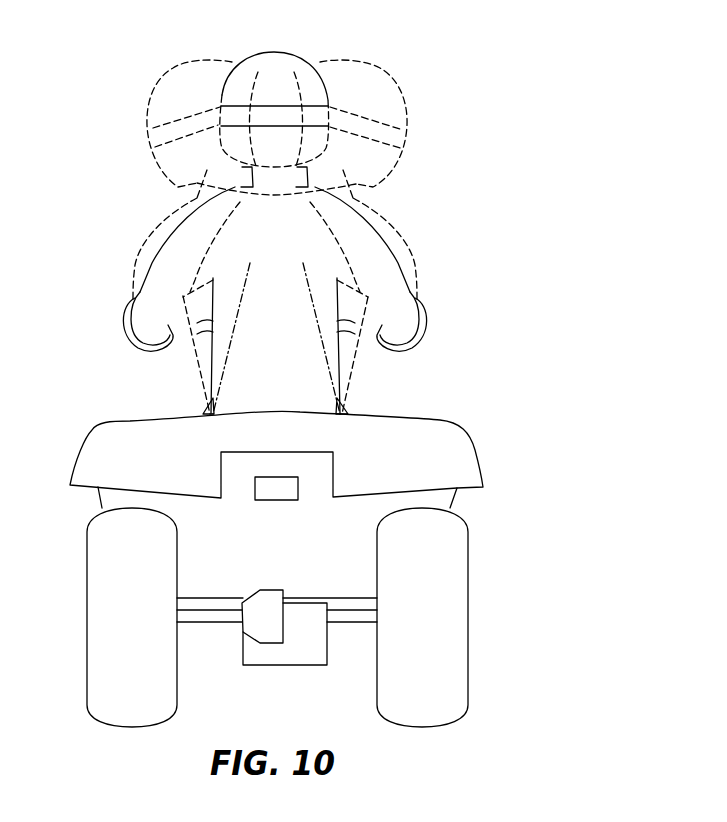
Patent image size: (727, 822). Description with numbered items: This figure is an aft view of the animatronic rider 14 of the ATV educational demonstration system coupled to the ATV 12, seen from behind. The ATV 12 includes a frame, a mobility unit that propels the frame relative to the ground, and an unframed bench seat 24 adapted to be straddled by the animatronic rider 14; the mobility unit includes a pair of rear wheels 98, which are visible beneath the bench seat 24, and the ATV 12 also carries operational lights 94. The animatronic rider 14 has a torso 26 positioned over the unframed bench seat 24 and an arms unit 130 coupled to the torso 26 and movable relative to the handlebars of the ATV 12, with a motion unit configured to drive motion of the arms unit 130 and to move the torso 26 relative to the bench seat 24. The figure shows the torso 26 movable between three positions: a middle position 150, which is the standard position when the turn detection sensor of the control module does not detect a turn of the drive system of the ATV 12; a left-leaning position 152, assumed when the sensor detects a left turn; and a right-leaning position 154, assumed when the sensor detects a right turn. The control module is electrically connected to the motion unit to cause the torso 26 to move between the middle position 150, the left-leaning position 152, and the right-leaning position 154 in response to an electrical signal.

The ATV 12 is at (580, 468).
The animatronic rider 14 is at (555, 156).
The unframed bench seat 24 is at (432, 412).
The torso 26 is at (270, 340).
The operational lights 94 is at (277, 490).
The rear wheels 98 is at (468, 637).
The arms unit 130 is at (197, 263).
The middle position 150 is at (303, 62).
The left-leaning position 152 is at (405, 105).
The right-leaning position 154 is at (162, 76).